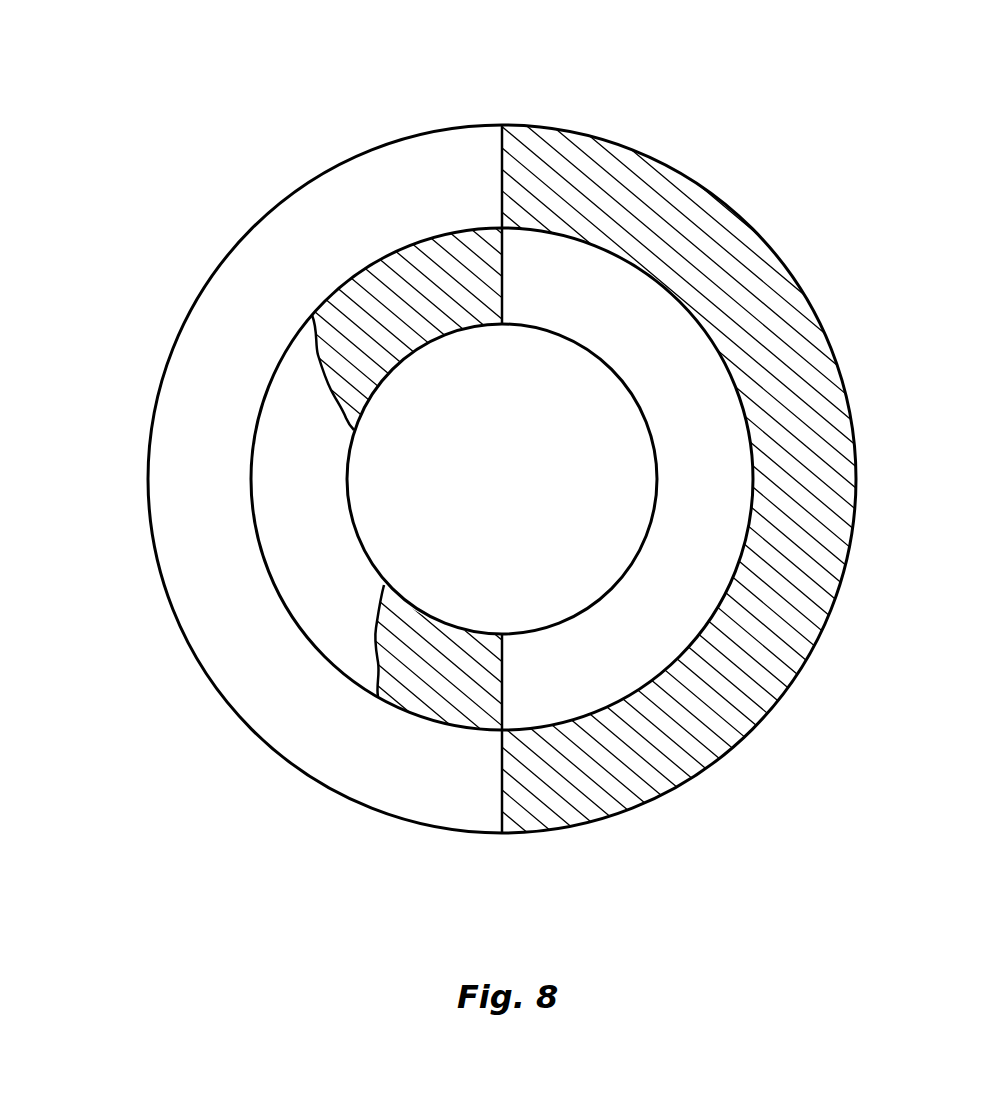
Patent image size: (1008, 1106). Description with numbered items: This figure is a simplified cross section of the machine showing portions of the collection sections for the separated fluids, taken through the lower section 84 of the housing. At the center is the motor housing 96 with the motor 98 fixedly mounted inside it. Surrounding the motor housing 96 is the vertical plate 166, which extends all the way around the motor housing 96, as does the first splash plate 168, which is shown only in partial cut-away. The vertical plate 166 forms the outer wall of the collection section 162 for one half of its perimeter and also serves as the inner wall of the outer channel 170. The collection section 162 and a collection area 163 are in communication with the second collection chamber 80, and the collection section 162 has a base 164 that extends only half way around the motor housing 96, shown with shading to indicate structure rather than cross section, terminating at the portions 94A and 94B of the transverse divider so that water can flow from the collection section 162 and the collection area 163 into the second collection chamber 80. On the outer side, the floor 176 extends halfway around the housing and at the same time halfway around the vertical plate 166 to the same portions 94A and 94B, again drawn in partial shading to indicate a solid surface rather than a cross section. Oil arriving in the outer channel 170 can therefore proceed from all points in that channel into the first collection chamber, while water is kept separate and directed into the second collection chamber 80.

The second collection chamber 80 is at (640, 632).
The lower section 84 is at (820, 640).
The portion of the transverse divider 94A is at (500, 173).
The portion of the transverse divider 94B is at (501, 763).
The motor housing 96 is at (643, 405).
The motor 98 is at (503, 450).
The collection section 162 is at (424, 675).
The collection area 163 is at (640, 337).
The base 164 is at (370, 307).
The vertical plate 166 is at (440, 728).
The first splash plate 168 is at (305, 587).
The outer channel 170 is at (198, 518).
The floor 176 is at (698, 222).